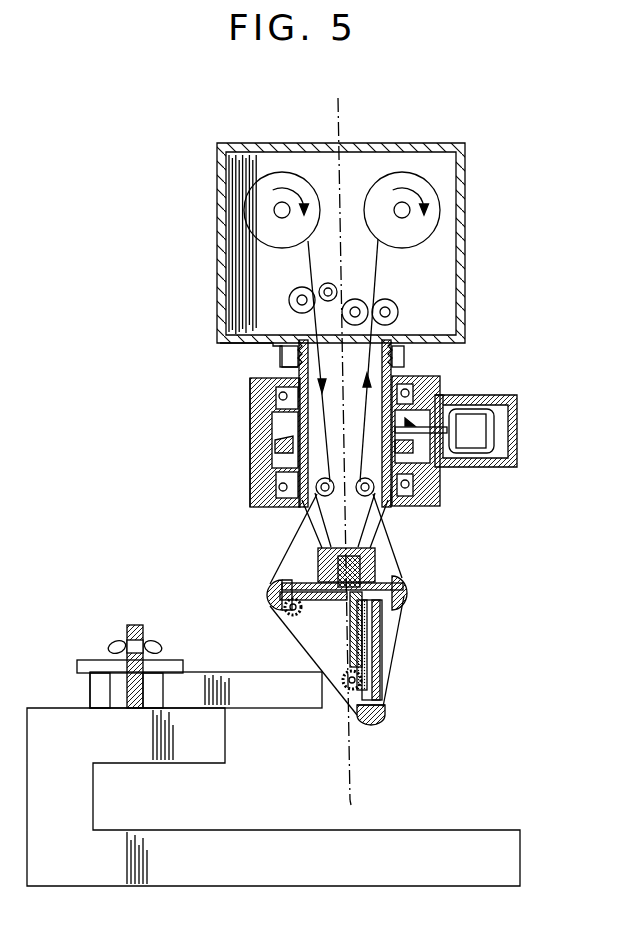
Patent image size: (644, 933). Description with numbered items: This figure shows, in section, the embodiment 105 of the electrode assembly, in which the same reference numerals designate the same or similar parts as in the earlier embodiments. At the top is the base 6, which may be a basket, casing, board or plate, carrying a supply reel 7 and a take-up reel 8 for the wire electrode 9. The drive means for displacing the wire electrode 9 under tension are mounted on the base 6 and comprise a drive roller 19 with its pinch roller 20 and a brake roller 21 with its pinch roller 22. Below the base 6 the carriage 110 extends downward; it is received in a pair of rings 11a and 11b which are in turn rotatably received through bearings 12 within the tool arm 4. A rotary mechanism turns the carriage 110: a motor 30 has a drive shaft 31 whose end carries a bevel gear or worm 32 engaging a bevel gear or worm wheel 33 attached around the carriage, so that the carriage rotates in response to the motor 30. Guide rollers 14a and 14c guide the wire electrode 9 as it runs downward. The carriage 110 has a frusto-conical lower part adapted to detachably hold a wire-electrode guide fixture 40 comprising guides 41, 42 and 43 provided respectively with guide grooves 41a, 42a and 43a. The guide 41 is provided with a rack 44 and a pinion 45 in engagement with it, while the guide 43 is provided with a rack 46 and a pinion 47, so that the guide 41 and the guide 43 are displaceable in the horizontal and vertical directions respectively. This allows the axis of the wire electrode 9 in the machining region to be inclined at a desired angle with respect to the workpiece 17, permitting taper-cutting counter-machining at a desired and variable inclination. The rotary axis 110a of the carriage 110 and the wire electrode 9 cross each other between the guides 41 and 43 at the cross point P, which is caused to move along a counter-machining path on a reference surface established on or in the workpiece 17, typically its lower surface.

The base 6 is at (456, 246).
The supply reel 7 is at (251, 204).
The take-up reel 8 is at (428, 187).
The wire electrode 9 is at (313, 268).
The drive roller 19 is at (399, 312).
The pinch roller 20 is at (360, 302).
The brake roller 21 is at (289, 303).
The pinch roller 22 is at (320, 289).
The carriage 110 is at (287, 355).
The ring 11a is at (290, 376).
The ring 11b is at (397, 507).
The bearings 12 is at (257, 393).
The tool arm 4 is at (252, 452).
The embodiment of electrode assembly 105 is at (118, 410).
The bevel gear or worm wheel 33 is at (272, 440).
The drive shaft 31 is at (443, 407).
The motor 30 is at (490, 430).
The bevel gear or worm 32 is at (417, 445).
The guide roller 14a is at (316, 510).
The guide roller 14c is at (377, 521).
The guide 41 is at (275, 588).
The guide groove 41a is at (265, 600).
The guide 42 is at (407, 585).
The guide groove 42a is at (406, 598).
The rack 44 is at (286, 615).
The pinion 45 is at (305, 612).
The rack 46 is at (342, 690).
The pinion 47 is at (382, 643).
The wire-electrode guide fixture 40 is at (440, 661).
The guide 43 is at (368, 723).
The guide groove 43a is at (372, 722).
The cross point P is at (343, 700).
The rotary axis 110a is at (353, 800).
The workpiece 17 is at (207, 674).